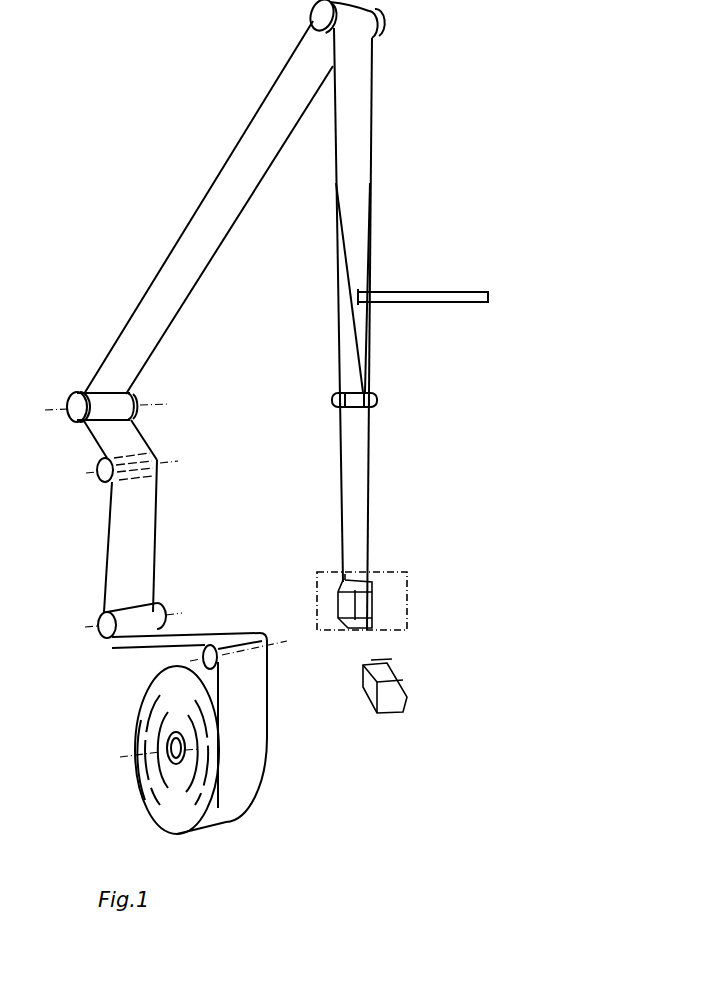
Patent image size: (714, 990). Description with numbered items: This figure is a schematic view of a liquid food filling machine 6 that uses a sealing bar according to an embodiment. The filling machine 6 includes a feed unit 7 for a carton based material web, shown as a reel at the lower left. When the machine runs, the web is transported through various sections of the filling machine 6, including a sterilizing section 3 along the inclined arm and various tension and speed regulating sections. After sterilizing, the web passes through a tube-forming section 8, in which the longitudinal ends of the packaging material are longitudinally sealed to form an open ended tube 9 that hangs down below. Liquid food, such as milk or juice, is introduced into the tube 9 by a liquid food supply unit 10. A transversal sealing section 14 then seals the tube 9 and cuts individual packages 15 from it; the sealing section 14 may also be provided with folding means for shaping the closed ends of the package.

The sterilizing section 3 is at (140, 282).
The liquid food filling machine 6 is at (542, 265).
The feed unit 7 is at (152, 713).
The tube-forming section 8 is at (330, 391).
The open ended tube 9 is at (357, 447).
The liquid food supply unit 10 is at (478, 297).
The transversal sealing section 14 is at (400, 597).
The individual packages 15 is at (393, 677).